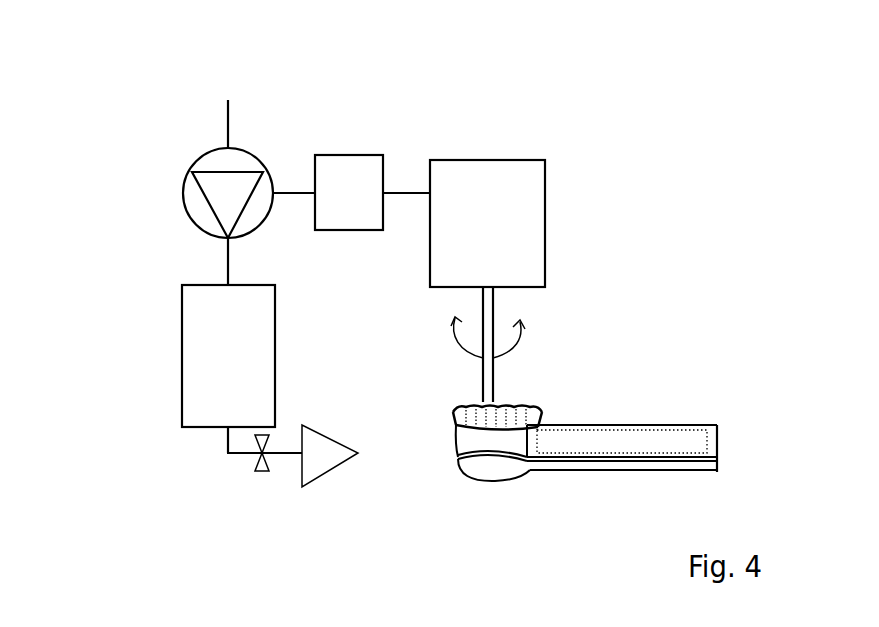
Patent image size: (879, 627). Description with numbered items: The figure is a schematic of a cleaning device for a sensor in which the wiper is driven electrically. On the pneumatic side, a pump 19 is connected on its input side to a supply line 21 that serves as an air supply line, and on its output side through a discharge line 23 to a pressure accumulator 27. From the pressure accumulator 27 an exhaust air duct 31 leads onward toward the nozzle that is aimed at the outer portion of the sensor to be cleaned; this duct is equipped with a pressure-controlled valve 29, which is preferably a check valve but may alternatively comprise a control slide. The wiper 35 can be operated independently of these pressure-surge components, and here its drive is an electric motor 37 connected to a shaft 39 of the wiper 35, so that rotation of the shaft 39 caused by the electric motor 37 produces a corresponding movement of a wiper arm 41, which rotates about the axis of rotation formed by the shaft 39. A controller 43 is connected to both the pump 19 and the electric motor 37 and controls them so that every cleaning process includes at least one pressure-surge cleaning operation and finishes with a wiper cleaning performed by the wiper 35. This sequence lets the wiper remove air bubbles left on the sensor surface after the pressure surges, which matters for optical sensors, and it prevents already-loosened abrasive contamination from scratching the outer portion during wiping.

The pump 19 is at (217, 197).
The supply line 21 is at (227, 127).
The discharge line 23 is at (226, 259).
The pressure accumulator 27 is at (215, 368).
The pressure-controlled valve 29 is at (258, 473).
The exhaust air duct 31 is at (225, 451).
The wiper 35 is at (503, 473).
The electric motor 37 is at (474, 236).
The shaft 39 is at (493, 318).
The wiper arm 41 is at (593, 462).
The controller 43 is at (339, 205).